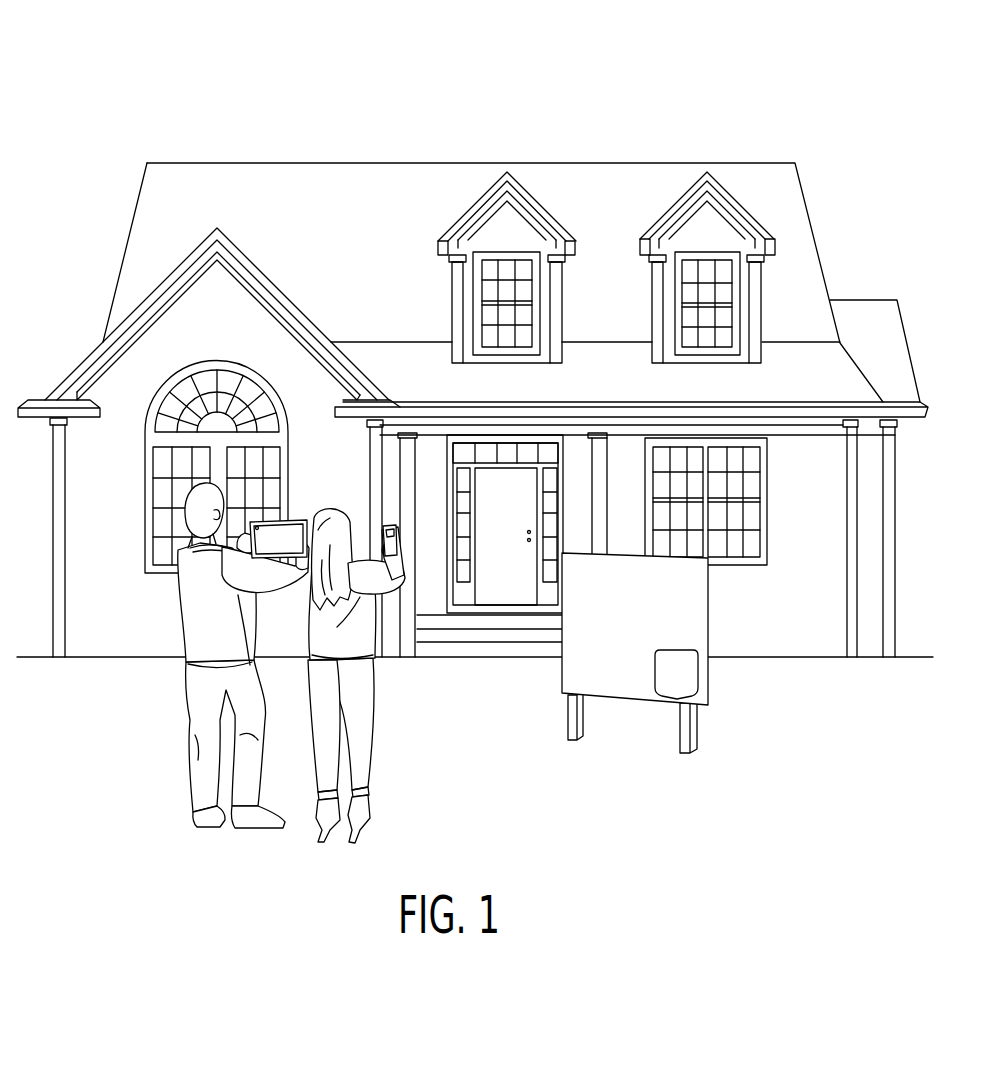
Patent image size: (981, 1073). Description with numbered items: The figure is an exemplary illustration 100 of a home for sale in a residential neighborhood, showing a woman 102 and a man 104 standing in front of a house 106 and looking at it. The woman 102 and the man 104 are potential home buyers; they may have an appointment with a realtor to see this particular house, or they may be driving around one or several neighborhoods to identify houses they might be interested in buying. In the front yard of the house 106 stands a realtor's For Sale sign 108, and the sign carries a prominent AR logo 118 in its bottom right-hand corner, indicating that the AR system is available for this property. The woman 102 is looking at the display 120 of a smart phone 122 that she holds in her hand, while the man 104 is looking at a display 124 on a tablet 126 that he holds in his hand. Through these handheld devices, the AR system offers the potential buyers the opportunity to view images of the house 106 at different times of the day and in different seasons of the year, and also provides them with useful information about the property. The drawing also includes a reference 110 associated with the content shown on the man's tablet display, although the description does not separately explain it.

The illustration 100 is at (810, 103).
The woman 102 is at (358, 728).
The man 104 is at (185, 753).
The house 106 is at (652, 195).
The For Sale sign 108 is at (710, 598).
The augmented reality content displayed on device 110 is at (272, 542).
The AR logo 118 is at (690, 683).
The display 120 is at (387, 527).
The smart phone 122 is at (400, 533).
The display 124 is at (291, 532).
The tablet 126 is at (258, 513).